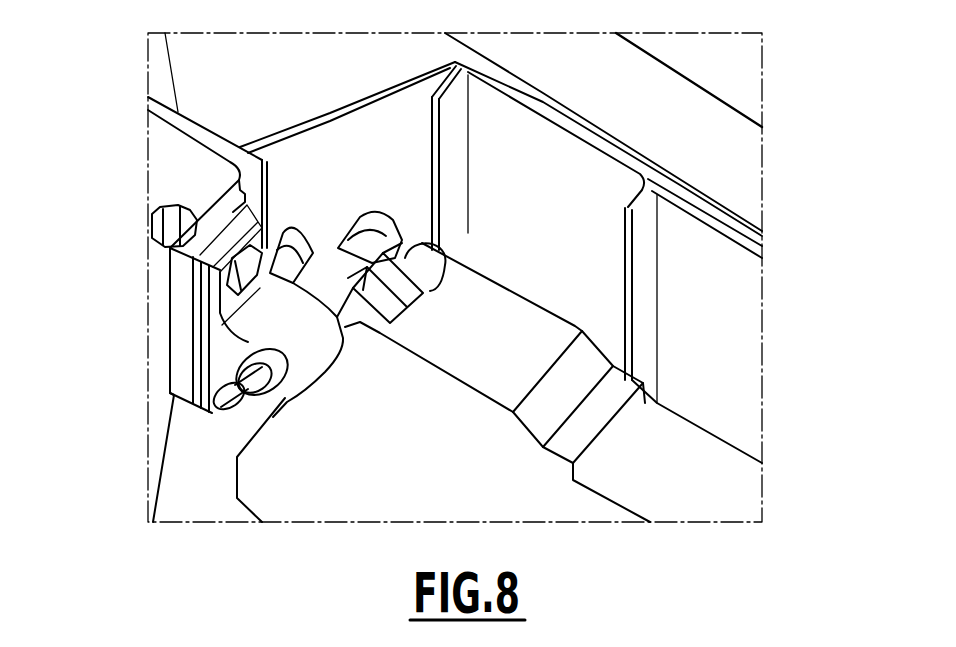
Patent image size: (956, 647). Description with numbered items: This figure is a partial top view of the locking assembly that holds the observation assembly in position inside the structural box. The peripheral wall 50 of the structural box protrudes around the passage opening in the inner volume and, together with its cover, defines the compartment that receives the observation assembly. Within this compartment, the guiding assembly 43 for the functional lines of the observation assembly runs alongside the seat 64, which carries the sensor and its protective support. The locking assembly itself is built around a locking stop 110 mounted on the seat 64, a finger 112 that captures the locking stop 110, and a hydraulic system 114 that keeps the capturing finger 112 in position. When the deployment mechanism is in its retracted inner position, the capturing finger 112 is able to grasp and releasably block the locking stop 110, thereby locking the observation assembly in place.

The guiding assembly 43 is at (322, 78).
The peripheral wall 50 is at (707, 123).
The seat 64 is at (168, 158).
The locking stop 110 is at (340, 252).
The finger 112 is at (397, 288).
The hydraulic system 114 is at (333, 485).